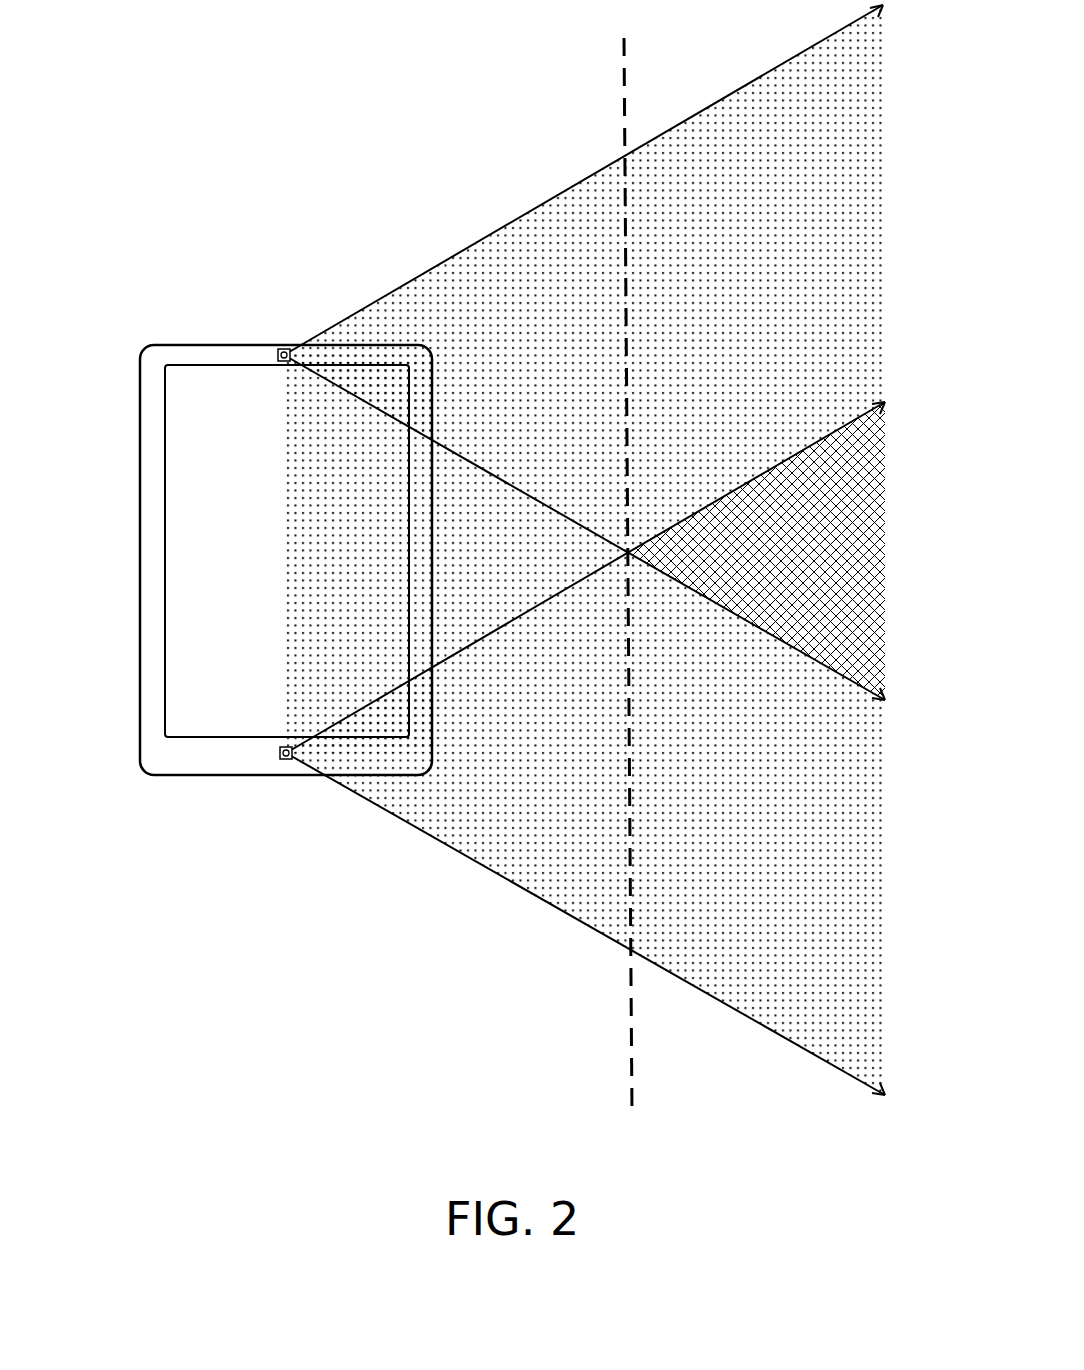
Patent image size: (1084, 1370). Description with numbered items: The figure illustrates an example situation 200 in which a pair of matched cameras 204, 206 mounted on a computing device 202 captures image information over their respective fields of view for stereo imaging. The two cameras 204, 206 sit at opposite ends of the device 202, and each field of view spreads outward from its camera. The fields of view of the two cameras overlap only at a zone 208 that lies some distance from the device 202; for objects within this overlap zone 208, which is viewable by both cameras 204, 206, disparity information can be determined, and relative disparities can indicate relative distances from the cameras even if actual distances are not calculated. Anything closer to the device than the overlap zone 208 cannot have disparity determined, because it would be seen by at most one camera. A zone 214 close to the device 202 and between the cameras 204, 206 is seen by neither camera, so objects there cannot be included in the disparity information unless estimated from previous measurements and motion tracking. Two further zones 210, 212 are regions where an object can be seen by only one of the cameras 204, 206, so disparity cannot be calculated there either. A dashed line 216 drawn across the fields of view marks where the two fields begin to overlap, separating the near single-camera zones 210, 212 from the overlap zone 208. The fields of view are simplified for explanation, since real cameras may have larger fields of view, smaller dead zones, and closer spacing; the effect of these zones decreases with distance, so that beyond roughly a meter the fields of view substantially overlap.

The example situation 200 is at (194, 123).
The computing device 202 is at (157, 346).
The camera 204 is at (283, 349).
The camera 206 is at (283, 762).
The overlap zone 208 is at (756, 551).
The zone 210 is at (584, 279).
The zone 212 is at (585, 824).
The zone 214 is at (456, 554).
The reference plane 216 is at (628, 1012).